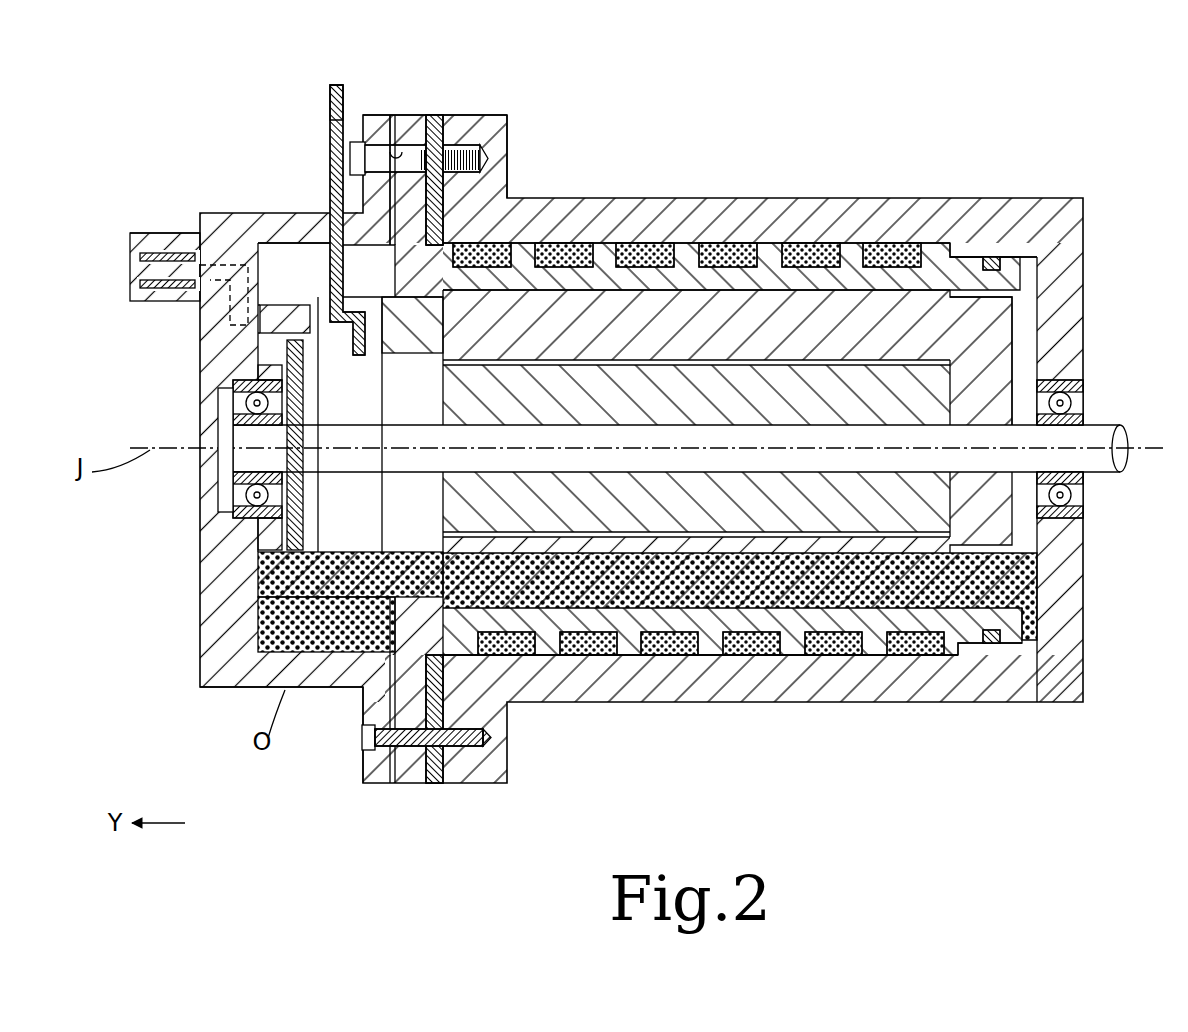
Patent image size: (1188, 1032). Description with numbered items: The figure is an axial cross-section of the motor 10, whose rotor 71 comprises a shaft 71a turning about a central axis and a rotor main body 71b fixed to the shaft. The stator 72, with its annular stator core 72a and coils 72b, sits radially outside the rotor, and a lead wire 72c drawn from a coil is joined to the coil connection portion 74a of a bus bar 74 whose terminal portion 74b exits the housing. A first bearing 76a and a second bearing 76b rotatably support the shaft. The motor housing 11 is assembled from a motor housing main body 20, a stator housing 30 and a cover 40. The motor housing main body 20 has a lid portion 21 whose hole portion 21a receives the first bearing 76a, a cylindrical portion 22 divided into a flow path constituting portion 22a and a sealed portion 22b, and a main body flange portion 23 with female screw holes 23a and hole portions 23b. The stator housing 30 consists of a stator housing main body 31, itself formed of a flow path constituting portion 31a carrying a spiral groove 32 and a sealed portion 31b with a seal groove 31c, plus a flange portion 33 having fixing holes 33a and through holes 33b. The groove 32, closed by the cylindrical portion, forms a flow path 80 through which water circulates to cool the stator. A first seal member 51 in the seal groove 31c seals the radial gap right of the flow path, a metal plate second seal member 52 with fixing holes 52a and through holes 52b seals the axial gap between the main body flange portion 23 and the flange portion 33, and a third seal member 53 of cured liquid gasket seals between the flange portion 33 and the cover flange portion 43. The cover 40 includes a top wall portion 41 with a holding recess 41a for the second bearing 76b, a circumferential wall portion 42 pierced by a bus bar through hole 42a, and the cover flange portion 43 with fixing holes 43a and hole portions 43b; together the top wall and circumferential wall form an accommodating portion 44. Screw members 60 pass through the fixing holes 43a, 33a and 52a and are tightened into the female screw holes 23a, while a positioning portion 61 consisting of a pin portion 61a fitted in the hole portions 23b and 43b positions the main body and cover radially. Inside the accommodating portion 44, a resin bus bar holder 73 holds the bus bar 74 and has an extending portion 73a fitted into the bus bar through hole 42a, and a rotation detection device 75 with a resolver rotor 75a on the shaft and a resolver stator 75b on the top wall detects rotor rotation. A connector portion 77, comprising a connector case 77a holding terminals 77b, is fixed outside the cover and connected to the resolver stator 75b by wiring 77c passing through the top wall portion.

The motor 10 is at (1063, 148).
The motor housing 11 is at (1065, 193).
The motor housing main body 20 is at (607, 196).
The lid portion 21 is at (1075, 612).
The hole portion 21a is at (1060, 495).
The cylindrical portion 22 is at (876, 130).
The flow path constituting portion 22a is at (890, 210).
The sealed portion 22b is at (975, 252).
The main body flange portion 23 is at (492, 125).
The female screw hole 23a is at (470, 156).
The hole portion 23b is at (481, 752).
The stator housing 30 is at (408, 110).
The stator housing main body 31 is at (975, 785).
The flow path constituting portion 31a is at (862, 642).
The sealed portion 31b is at (933, 642).
The seal groove 31c is at (993, 646).
The groove 32 is at (610, 648).
The flange portion 33 is at (436, 782).
The fixing hole 33a is at (433, 158).
The through hole 33b is at (430, 766).
The cover 40 is at (215, 688).
The top wall portion 41 is at (215, 610).
The holding recess 41a is at (222, 500).
The circumferential wall portion 42 is at (293, 696).
The bus bar through hole 42a is at (320, 262).
The cover flange portion 43 is at (391, 128).
The fixing hole 43a is at (394, 142).
The hole portion 43b is at (393, 762).
The accommodating portion 44 is at (272, 262).
The first seal member 51 is at (993, 258).
The second seal member 52 is at (440, 192).
The fixing hole 52a is at (482, 165).
The through hole 52b is at (476, 754).
The third seal member 53 is at (375, 712).
The screw member 60 is at (356, 146).
The positioning portion 61 is at (355, 742).
The pin portion 61a is at (470, 736).
The rotor 71 is at (955, 375).
The shaft 71a is at (1098, 432).
The rotor main body 71b is at (945, 510).
The stator 72 is at (1020, 325).
The stator core 72a is at (678, 300).
The coil 72b is at (1000, 315).
The lead wire 72c is at (355, 350).
The bus bar holder 73 is at (258, 648).
The extending portion 73a is at (320, 298).
The bus bar 74 is at (328, 124).
The coil connection portion 74a is at (295, 358).
The terminal portion 74b is at (333, 87).
The rotation detection device 75 is at (270, 302).
The resolver rotor 75a is at (280, 540).
The resolver stator 75b is at (275, 590).
The first bearing 76a is at (1065, 395).
The second bearing 76b is at (240, 408).
The connector portion 77 is at (140, 238).
The connector case 77a is at (165, 247).
The terminal 77b is at (135, 284).
The wiring 77c is at (240, 330).
The flow path 80 is at (760, 656).